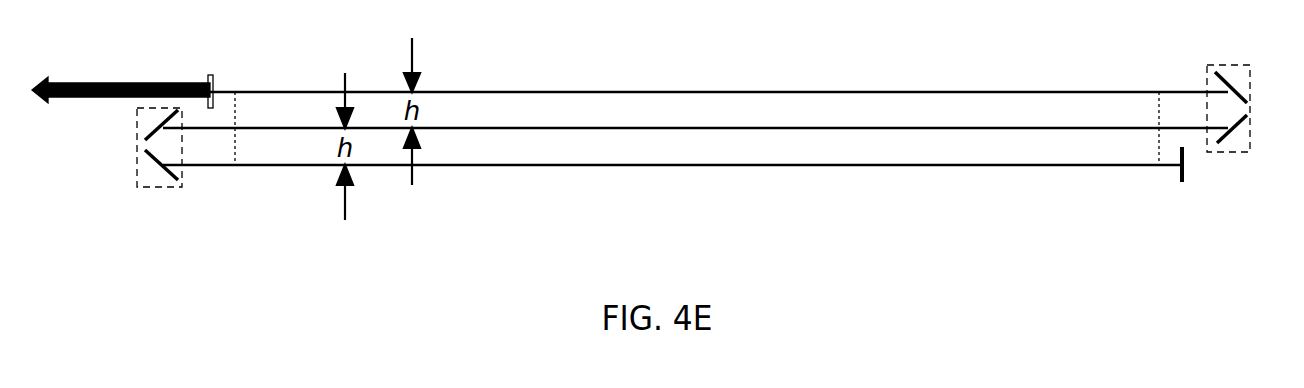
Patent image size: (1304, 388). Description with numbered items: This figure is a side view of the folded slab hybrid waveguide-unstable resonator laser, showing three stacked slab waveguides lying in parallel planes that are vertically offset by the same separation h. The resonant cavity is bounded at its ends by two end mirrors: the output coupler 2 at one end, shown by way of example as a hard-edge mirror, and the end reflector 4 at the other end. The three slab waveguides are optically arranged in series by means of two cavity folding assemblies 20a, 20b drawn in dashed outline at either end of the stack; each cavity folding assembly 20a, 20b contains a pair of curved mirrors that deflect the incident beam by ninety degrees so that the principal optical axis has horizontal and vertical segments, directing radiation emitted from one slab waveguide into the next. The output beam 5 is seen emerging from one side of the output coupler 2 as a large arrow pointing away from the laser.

The output beam 5 is at (115, 83).
The output coupler 2 is at (206, 78).
The cavity folding assembly 20b is at (152, 190).
The cavity folding assembly 20a is at (1215, 153).
The end reflector 4 is at (1178, 174).